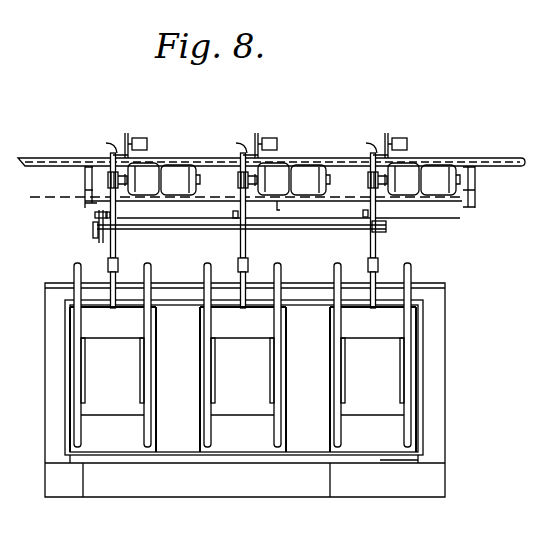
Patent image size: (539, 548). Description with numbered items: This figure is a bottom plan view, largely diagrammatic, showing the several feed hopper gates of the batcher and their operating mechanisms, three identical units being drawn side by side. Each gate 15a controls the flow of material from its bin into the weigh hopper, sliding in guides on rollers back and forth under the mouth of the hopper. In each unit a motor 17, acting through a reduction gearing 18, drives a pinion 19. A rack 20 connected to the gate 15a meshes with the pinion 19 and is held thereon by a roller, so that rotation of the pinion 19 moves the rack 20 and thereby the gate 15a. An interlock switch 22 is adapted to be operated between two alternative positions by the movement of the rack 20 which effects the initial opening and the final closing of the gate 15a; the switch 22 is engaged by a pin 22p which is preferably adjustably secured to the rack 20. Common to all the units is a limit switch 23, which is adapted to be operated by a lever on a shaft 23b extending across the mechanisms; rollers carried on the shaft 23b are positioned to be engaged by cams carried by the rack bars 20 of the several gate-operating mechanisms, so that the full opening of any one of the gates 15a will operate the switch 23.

The gate 15a is at (122, 408).
The motor 17 is at (169, 166).
The reduction gearing 18 is at (151, 190).
The pinion 19 is at (108, 180).
The rack 20 is at (116, 243).
The interlock switch 22 is at (126, 135).
The pin 22p is at (225, 144).
The limit switch 23 is at (94, 232).
The shaft 23b is at (195, 222).